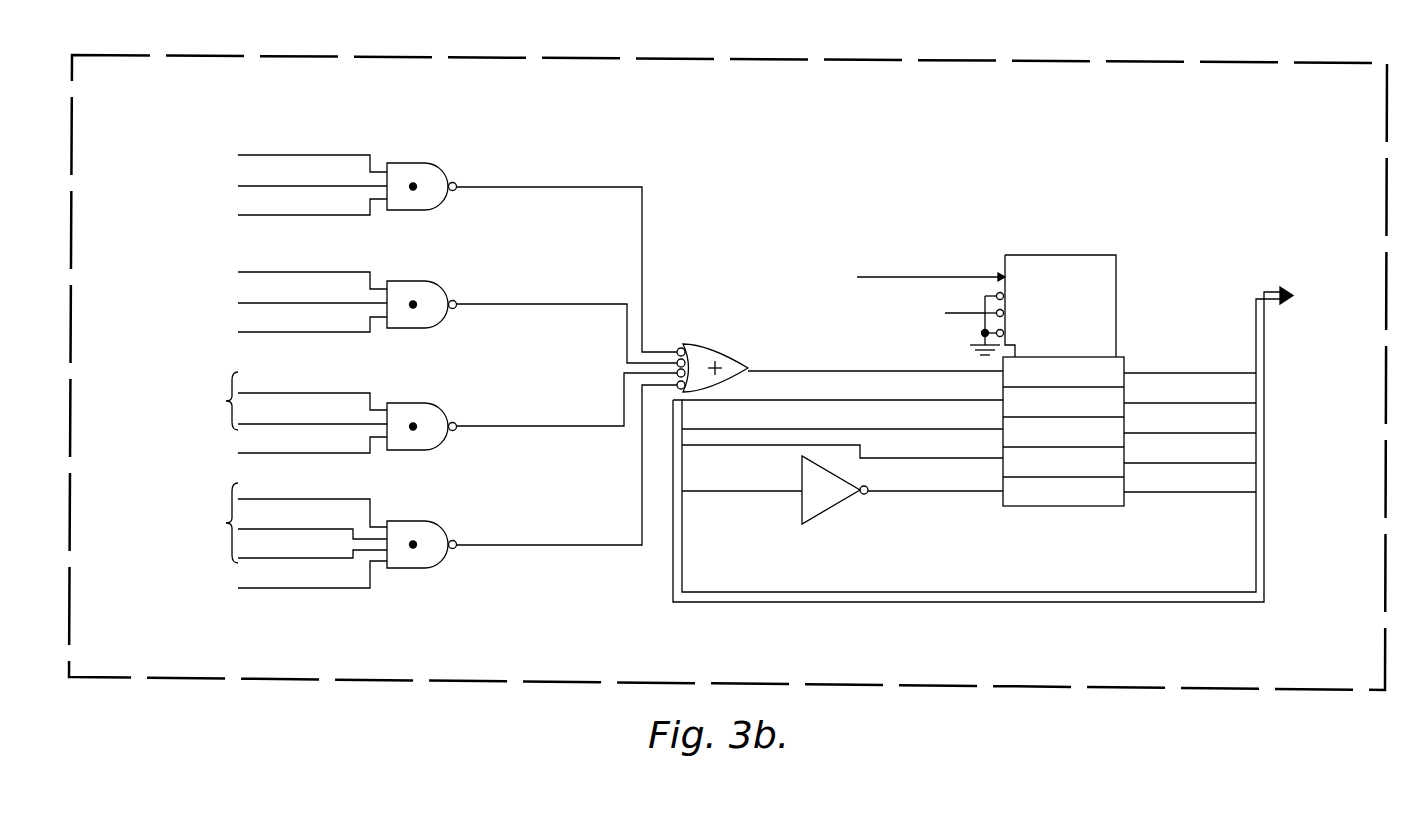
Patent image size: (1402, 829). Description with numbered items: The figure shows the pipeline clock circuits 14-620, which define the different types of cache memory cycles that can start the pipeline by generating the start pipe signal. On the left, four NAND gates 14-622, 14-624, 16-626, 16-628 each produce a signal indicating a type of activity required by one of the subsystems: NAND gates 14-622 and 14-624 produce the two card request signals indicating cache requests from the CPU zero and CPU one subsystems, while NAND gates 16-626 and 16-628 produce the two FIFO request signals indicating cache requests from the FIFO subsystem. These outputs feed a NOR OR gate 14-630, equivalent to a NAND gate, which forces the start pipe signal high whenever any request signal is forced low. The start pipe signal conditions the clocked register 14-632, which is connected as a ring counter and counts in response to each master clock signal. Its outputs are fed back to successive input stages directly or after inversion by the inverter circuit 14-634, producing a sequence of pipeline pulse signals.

The pipeline clock circuits 14-620 is at (728, 372).
The NAND gate 14-622 is at (428, 163).
The NAND gate 14-624 is at (428, 281).
The NAND gate 16-626 is at (427, 403).
The NAND gate 16-628 is at (427, 521).
The NOR OR gate 14-630 is at (695, 344).
The clocked register 14-632 is at (1058, 255).
The inverter circuit 14-634 is at (830, 510).